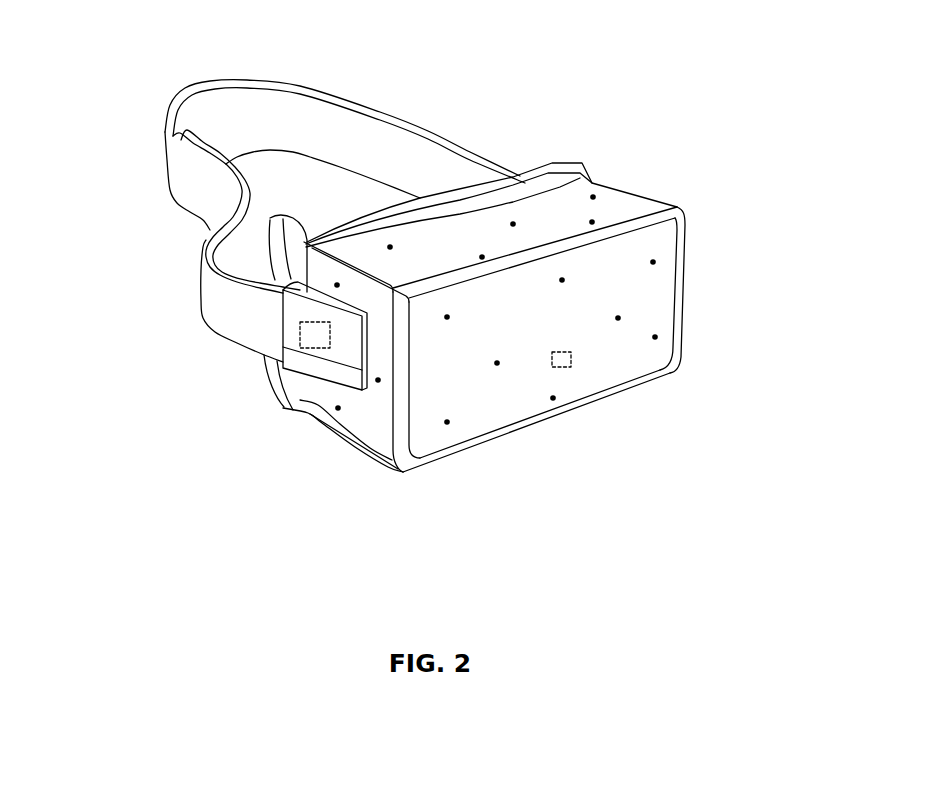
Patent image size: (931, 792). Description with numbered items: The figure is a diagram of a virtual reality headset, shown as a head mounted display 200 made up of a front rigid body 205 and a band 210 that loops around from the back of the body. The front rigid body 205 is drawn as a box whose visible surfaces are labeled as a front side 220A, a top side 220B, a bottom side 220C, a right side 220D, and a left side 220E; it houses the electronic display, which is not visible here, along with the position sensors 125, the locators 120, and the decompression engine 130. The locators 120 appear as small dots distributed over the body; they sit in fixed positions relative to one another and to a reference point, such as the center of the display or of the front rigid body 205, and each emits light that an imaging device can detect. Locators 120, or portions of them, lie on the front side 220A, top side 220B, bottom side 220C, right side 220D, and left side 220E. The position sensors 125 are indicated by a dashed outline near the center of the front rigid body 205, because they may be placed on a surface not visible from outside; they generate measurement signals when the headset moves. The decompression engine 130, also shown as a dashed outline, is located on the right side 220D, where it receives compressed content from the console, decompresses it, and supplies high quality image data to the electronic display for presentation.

The head mounted display 200 is at (59, 77).
The band 210 is at (428, 130).
The front rigid body 205 is at (447, 329).
The top side 220B is at (356, 245).
The front side 220A is at (436, 450).
The left side 220E is at (658, 188).
The right side 220D is at (369, 420).
The bottom side 220C is at (331, 451).
The decompression engine 130 is at (292, 330).
The locators 120 is at (665, 332).
The position sensors 125 is at (552, 377).